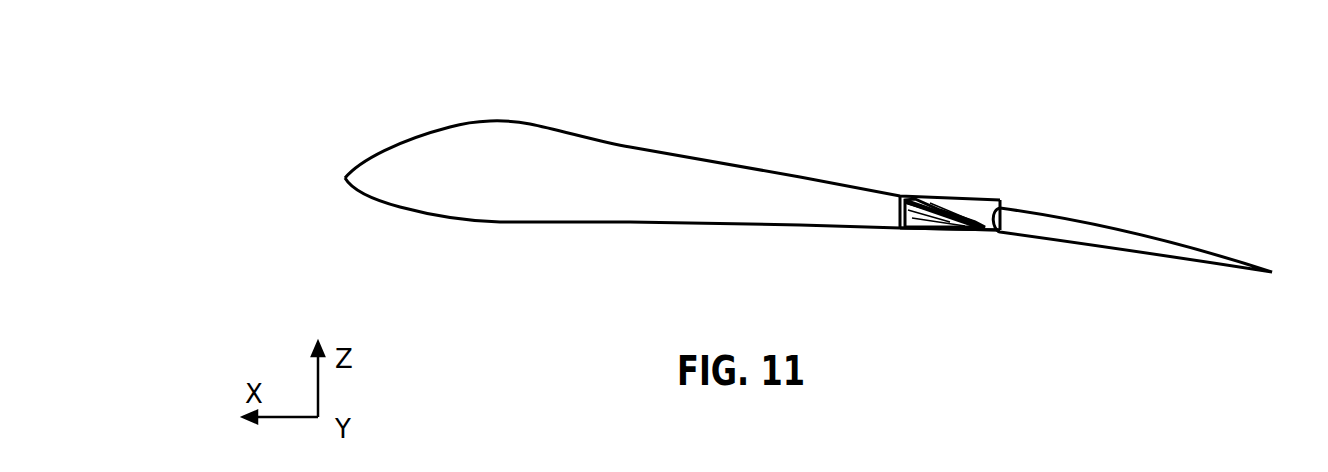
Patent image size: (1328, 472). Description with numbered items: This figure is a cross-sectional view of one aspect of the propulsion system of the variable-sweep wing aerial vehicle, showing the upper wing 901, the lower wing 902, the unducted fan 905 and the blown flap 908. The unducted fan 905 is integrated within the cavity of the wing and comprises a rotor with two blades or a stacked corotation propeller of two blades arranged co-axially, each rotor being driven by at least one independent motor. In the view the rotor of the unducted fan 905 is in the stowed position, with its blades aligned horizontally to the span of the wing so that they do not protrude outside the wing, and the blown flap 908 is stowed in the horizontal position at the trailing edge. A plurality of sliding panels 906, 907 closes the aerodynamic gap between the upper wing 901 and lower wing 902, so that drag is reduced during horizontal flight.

The upper wing 901 is at (575, 138).
The lower wing 902 is at (672, 122).
The unducted fan 905 is at (953, 197).
The sliding panel 906 is at (915, 196).
The sliding panel 907 is at (922, 228).
The blown flap 908 is at (1150, 233).